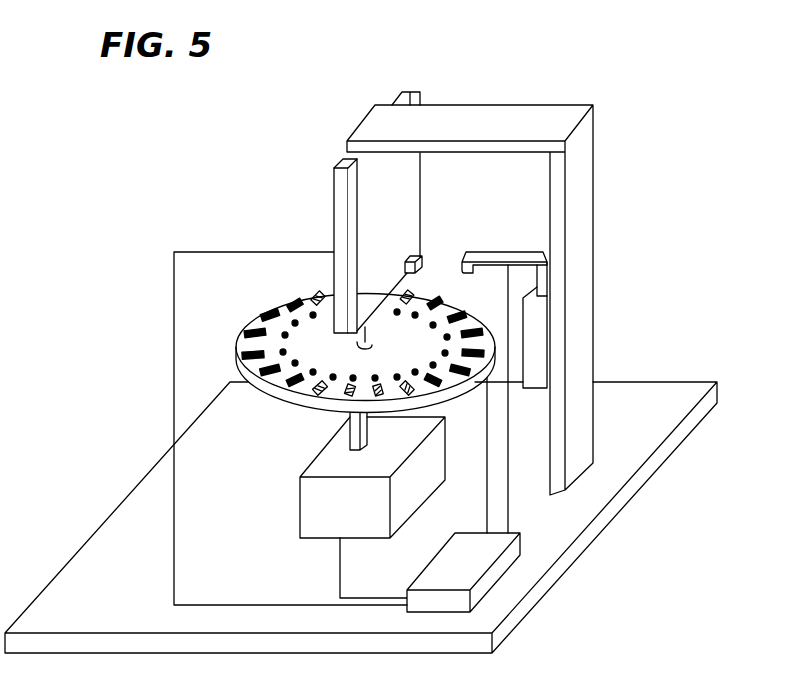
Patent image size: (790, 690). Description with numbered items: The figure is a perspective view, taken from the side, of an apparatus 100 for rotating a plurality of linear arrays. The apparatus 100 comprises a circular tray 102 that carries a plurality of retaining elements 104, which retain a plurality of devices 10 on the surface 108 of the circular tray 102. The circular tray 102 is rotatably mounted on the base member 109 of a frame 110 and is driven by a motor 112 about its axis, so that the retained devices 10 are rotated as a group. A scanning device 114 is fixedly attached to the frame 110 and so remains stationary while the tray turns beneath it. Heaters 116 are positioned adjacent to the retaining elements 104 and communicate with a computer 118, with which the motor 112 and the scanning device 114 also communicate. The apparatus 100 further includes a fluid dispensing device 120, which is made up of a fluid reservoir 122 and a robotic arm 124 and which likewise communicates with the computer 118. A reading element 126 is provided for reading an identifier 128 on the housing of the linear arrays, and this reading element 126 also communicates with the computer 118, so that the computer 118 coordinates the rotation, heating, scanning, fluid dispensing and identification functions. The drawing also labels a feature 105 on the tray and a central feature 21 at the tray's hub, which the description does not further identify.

The apparatus 100 is at (661, 141).
The base member 109 is at (631, 432).
The circular tray 102 is at (256, 389).
The surface 108 is at (313, 342).
The devices 10 is at (244, 333).
The pocket 105 is at (278, 366).
The retaining elements 104 is at (328, 297).
The center hub 21 is at (377, 347).
The heaters 116 is at (333, 375).
The motor 112 is at (327, 512).
The computer 118 is at (492, 578).
The scanning device 114 is at (347, 188).
The frame 110 is at (577, 275).
The fluid dispensing device 120 is at (573, 277).
The robotic arm 124 is at (483, 259).
The fluid reservoir 122 is at (533, 357).
The reading element 126 is at (427, 255).
The identifier 128 is at (432, 296).